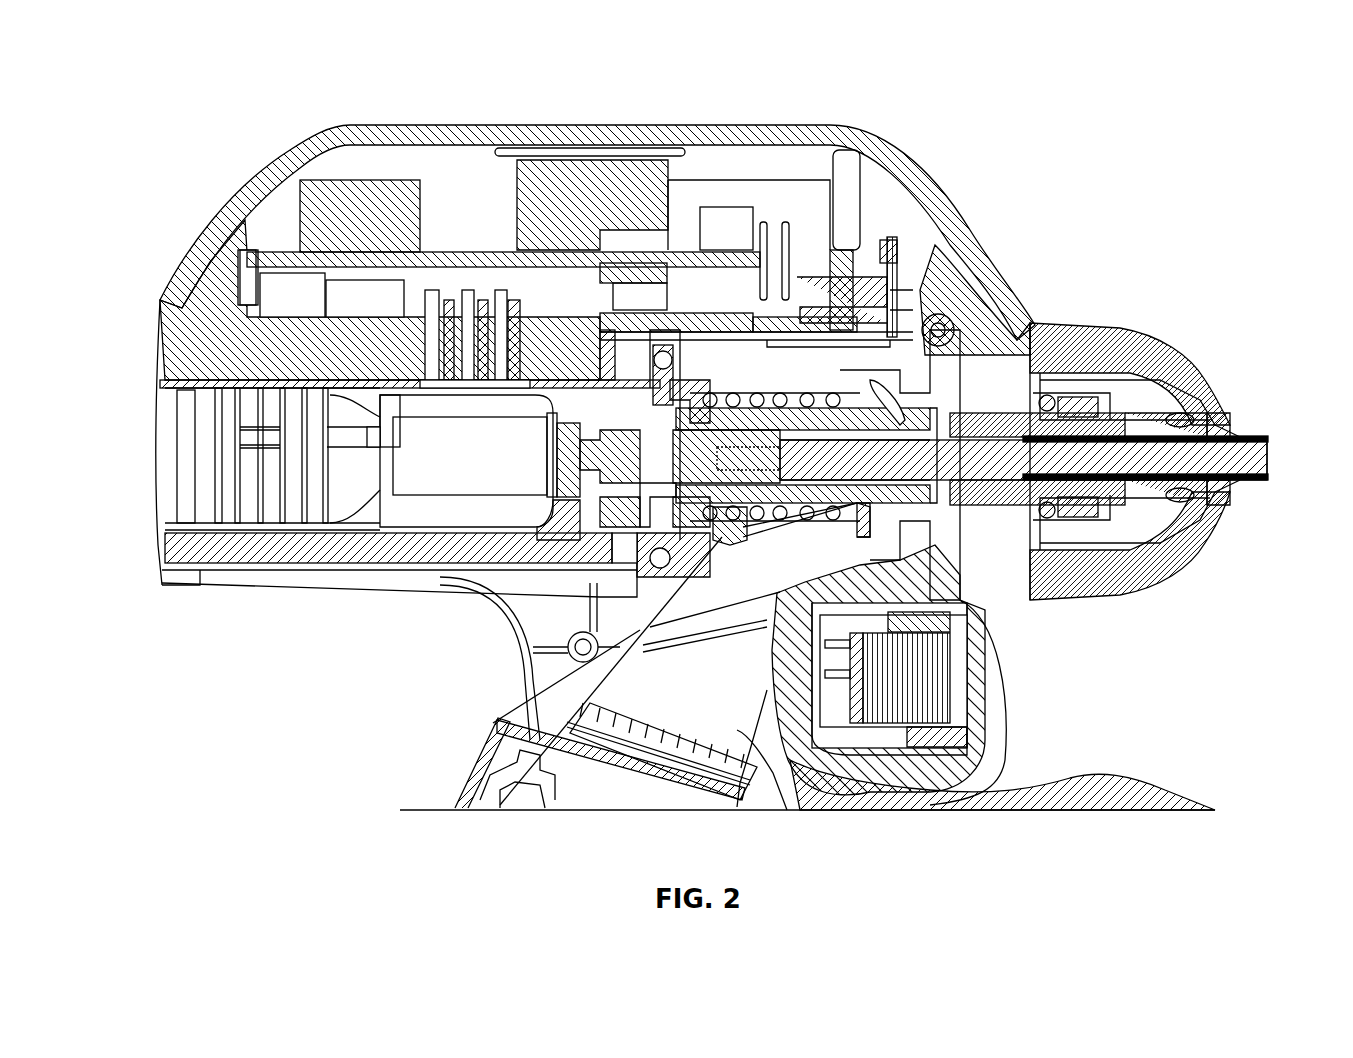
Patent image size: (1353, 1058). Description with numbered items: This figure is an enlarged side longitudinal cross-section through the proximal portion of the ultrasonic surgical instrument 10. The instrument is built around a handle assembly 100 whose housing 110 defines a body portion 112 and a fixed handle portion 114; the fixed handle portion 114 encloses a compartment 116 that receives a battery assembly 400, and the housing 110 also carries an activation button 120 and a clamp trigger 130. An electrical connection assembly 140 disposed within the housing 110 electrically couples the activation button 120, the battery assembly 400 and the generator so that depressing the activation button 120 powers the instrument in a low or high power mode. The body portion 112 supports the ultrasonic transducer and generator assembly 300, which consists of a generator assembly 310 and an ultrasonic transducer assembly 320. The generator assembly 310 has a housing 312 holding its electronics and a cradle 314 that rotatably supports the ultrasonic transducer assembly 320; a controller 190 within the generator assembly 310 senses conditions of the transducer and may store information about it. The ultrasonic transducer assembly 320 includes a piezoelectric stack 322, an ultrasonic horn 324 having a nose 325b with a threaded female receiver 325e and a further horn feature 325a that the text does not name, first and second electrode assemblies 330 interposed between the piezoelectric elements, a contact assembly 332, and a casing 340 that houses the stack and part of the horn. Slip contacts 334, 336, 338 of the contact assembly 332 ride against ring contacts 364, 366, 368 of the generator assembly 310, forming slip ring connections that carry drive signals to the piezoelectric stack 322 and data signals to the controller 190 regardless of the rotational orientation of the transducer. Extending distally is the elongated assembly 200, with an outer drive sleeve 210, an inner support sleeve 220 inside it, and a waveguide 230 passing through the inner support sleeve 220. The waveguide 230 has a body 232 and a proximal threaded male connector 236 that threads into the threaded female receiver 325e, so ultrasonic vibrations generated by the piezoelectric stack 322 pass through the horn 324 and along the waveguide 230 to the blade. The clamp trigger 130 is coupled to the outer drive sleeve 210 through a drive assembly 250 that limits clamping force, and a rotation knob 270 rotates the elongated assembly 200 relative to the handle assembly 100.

The ultrasonic surgical instrument 10 is at (1160, 202).
The handle assembly 100 is at (140, 215).
The housing 110 is at (525, 632).
The body portion 112 is at (960, 288).
The fixed handle portion 114 is at (470, 783).
The compartment 116 is at (510, 745).
The activation button 120 is at (985, 682).
The clamp trigger 130 is at (1098, 790).
The electrical connection assembly 140 is at (620, 695).
The controller 190 is at (750, 150).
The elongated assembly 200 is at (1205, 333).
The outer drive sleeve 210 is at (1243, 467).
The inner support sleeve 220 is at (1015, 437).
The waveguide 230 is at (1270, 452).
The body 232 is at (1240, 437).
The proximal threaded male connector 236 is at (767, 457).
The drive assembly 250 is at (823, 377).
The rotation knob 270 is at (1122, 360).
The ultrasonic transducer and generator assembly 300 is at (628, 82).
The generator assembly 310 is at (640, 118).
The housing 312 is at (522, 122).
The cradle 314 is at (192, 578).
The ultrasonic transducer assembly 320 is at (255, 380).
The piezoelectric stack 322 is at (315, 480).
The ultrasonic horn 324 is at (417, 477).
The shaft first portion 325a is at (500, 455).
The nose 325b is at (653, 463).
The threaded female receiver 325e is at (733, 463).
The first and second electrode assemblies 330 is at (390, 437).
The contact assembly 332 is at (520, 375).
The slip contact 334 is at (427, 300).
The slip contact 336 is at (470, 300).
The slip contact 338 is at (503, 300).
The casing 340 is at (178, 376).
The ring contact 364 is at (450, 310).
The ring contact 366 is at (483, 310).
The ring contact 368 is at (513, 310).
The battery assembly 400 is at (520, 800).